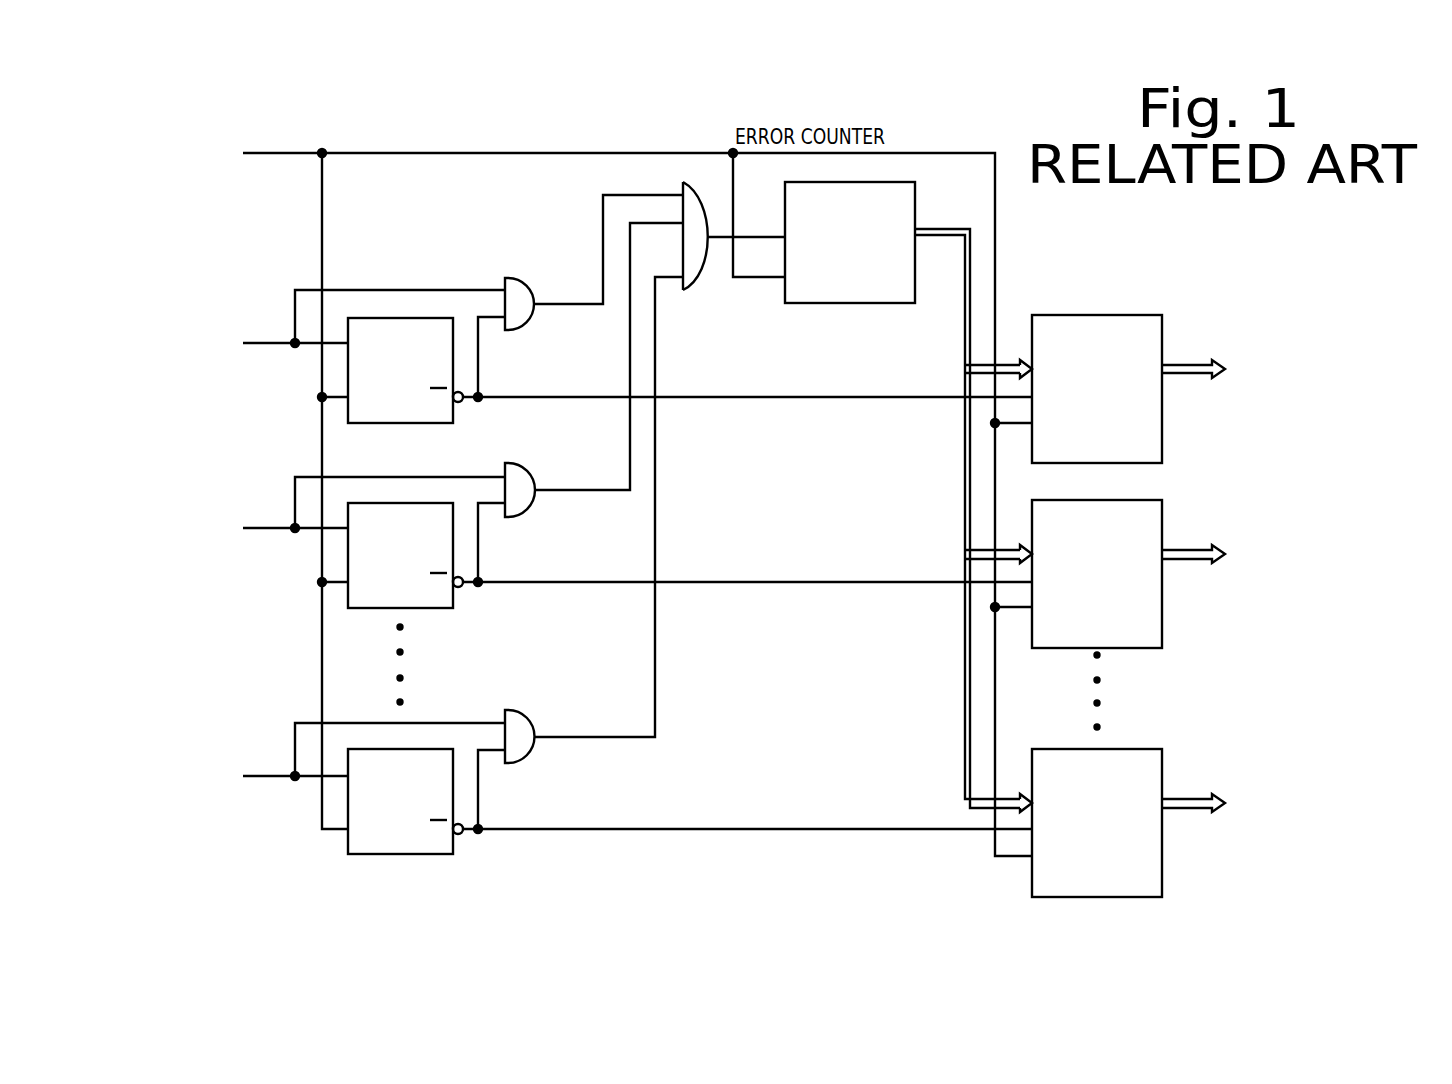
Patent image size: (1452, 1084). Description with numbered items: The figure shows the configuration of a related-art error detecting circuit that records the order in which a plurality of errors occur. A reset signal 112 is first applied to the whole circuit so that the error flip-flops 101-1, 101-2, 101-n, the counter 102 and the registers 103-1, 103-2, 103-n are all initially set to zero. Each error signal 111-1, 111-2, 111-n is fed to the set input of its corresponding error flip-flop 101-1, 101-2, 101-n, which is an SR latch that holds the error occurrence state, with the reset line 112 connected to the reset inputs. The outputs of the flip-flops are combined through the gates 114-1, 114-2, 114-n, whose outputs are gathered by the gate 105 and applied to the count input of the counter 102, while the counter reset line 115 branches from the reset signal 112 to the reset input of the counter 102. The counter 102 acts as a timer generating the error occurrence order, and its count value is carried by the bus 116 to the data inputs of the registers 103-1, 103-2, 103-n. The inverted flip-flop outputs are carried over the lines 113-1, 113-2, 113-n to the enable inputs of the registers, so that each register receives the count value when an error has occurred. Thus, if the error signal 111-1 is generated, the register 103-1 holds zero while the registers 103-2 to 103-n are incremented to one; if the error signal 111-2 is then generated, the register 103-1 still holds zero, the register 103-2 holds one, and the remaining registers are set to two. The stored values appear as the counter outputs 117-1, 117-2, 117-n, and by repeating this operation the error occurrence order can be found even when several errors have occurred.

The reset signal line 112 is at (268, 156).
The error signal 111-1 is at (270, 345).
The error signal 111-2 is at (270, 530).
The error signal 111-n is at (270, 778).
The error flip-flop 101-1 is at (402, 317).
The error flip-flop 101-2 is at (402, 502).
The error flip-flop 101-n is at (420, 749).
The AND gate 1 114-1 is at (560, 300).
The AND gate 2 114-2 is at (560, 487).
The AND gate n 114-n is at (560, 733).
The OR gate 105 is at (700, 276).
The counter reset line 115 is at (747, 236).
The counter 102 is at (915, 182).
The counter output bus 116 is at (963, 237).
The enable signal line 1 113-1 is at (793, 395).
The enable signal line 2 113-2 is at (793, 580).
The enable signal line n 113-n is at (793, 827).
The register 103-1 is at (1162, 423).
The register 103-2 is at (1162, 607).
The register 103-n is at (1162, 856).
The counter output 1 117-1 is at (1190, 363).
The counter output 2 117-2 is at (1190, 548).
The counter output n 117-n is at (1190, 797).